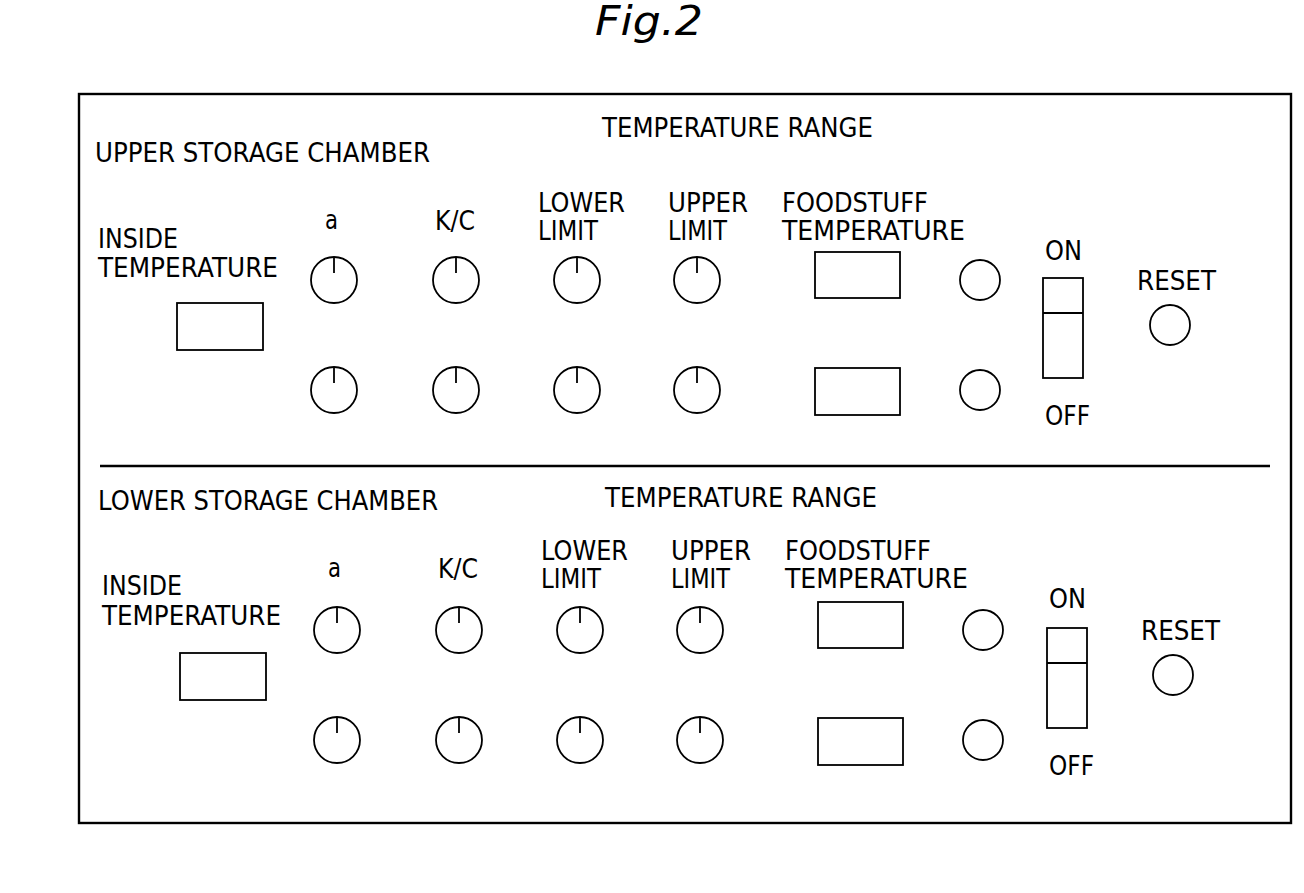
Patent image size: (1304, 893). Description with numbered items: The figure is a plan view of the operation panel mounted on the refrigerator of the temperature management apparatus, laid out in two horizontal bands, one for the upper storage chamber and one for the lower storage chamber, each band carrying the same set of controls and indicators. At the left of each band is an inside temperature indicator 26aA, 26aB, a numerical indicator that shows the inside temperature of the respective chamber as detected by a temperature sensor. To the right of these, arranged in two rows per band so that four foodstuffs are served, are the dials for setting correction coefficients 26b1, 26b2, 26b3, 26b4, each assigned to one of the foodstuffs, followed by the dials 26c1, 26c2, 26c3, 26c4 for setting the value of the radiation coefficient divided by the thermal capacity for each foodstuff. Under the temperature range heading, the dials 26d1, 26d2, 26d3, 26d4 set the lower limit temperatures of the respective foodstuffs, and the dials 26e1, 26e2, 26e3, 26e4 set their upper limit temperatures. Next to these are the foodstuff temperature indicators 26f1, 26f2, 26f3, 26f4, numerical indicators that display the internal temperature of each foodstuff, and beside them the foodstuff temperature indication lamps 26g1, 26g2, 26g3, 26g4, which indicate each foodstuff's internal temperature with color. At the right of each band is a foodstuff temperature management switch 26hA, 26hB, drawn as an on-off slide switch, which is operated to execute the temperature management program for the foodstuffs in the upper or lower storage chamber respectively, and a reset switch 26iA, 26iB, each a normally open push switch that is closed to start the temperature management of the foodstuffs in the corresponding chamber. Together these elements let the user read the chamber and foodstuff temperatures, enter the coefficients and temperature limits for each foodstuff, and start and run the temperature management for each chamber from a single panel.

The inside temperature indicator 26aA is at (185, 350).
The inside temperature indicator 26aB is at (188, 700).
The dial for setting correction coefficient 26b1 is at (321, 299).
The dial for setting correction coefficient 26b2 is at (321, 409).
The dial for setting correction coefficient 26b3 is at (324, 649).
The dial for setting correction coefficient 26b4 is at (324, 759).
The dial for setting radiation coefficient/thermal capacity 26c1 is at (443, 299).
The dial for setting radiation coefficient/thermal capacity 26c2 is at (443, 409).
The dial for setting radiation coefficient/thermal capacity 26c3 is at (446, 649).
The dial for setting radiation coefficient/thermal capacity 26c4 is at (446, 759).
The dial for setting lower limit temperature 26d1 is at (564, 299).
The dial for setting lower limit temperature 26d2 is at (564, 409).
The dial for setting lower limit temperature 26d3 is at (567, 649).
The dial for setting lower limit temperature 26d4 is at (567, 759).
The dial for setting upper limit temperature 26e1 is at (684, 299).
The dial for setting upper limit temperature 26e2 is at (684, 409).
The dial for setting upper limit temperature 26e3 is at (687, 649).
The dial for setting upper limit temperature 26e4 is at (687, 759).
The foodstuff temperature indicator 26f1 is at (823, 298).
The foodstuff temperature indicator 26f2 is at (823, 415).
The foodstuff temperature indicator 26f3 is at (826, 648).
The foodstuff temperature indicator 26f4 is at (826, 765).
The foodstuff temperature indication lamp 26g1 is at (966, 294).
The foodstuff temperature indication lamp 26g2 is at (966, 404).
The foodstuff temperature indication lamp 26g3 is at (969, 644).
The foodstuff temperature indication lamp 26g4 is at (969, 754).
The foodstuff temperature management switch 26hA is at (1083, 341).
The foodstuff temperature management switch 26hB is at (1087, 691).
The reset switch 26iA is at (1190, 323).
The reset switch 26iB is at (1193, 673).